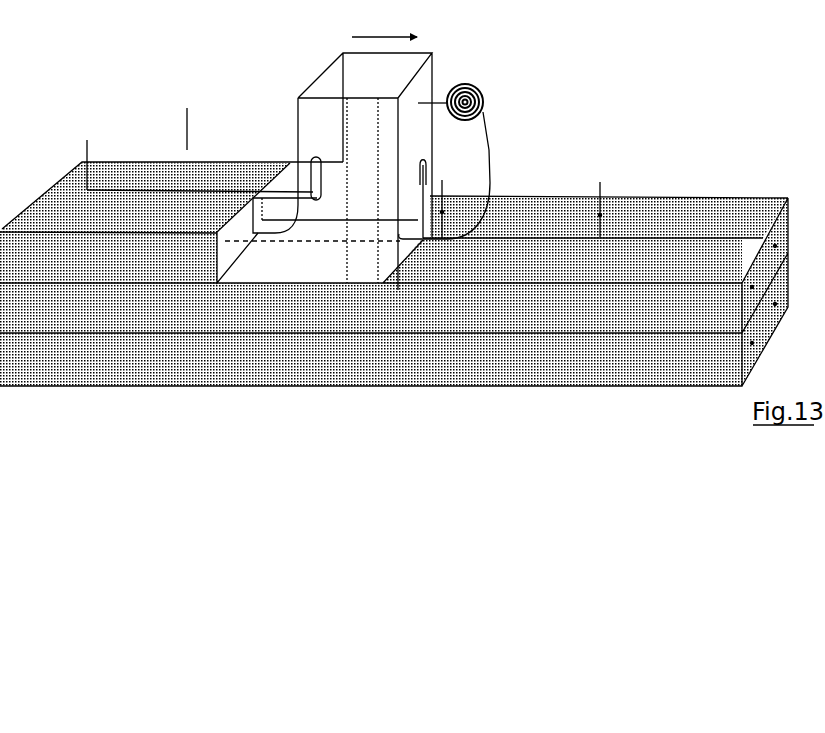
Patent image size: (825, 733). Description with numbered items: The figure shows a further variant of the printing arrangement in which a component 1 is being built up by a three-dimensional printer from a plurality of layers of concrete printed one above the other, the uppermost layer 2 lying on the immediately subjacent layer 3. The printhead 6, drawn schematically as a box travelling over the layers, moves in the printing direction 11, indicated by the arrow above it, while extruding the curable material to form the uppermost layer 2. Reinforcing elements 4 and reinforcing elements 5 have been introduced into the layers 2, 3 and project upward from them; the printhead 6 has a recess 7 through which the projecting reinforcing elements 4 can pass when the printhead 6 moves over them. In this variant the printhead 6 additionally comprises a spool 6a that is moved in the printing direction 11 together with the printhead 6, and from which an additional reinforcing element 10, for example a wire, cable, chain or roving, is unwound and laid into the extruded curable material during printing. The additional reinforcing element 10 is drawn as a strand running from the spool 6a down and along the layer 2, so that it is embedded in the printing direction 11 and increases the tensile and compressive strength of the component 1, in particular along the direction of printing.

The component 1 is at (724, 142).
The uppermost layer 2 is at (117, 271).
The subjacent layer 3 is at (154, 328).
The reinforcing elements 4 is at (186, 186).
The reinforcing elements 5 is at (91, 174).
The printhead 6 is at (437, 72).
The spool 6a is at (486, 82).
The recess 7 is at (428, 177).
The additional reinforcing element 10 is at (490, 105).
The printing direction 11 is at (384, 24).